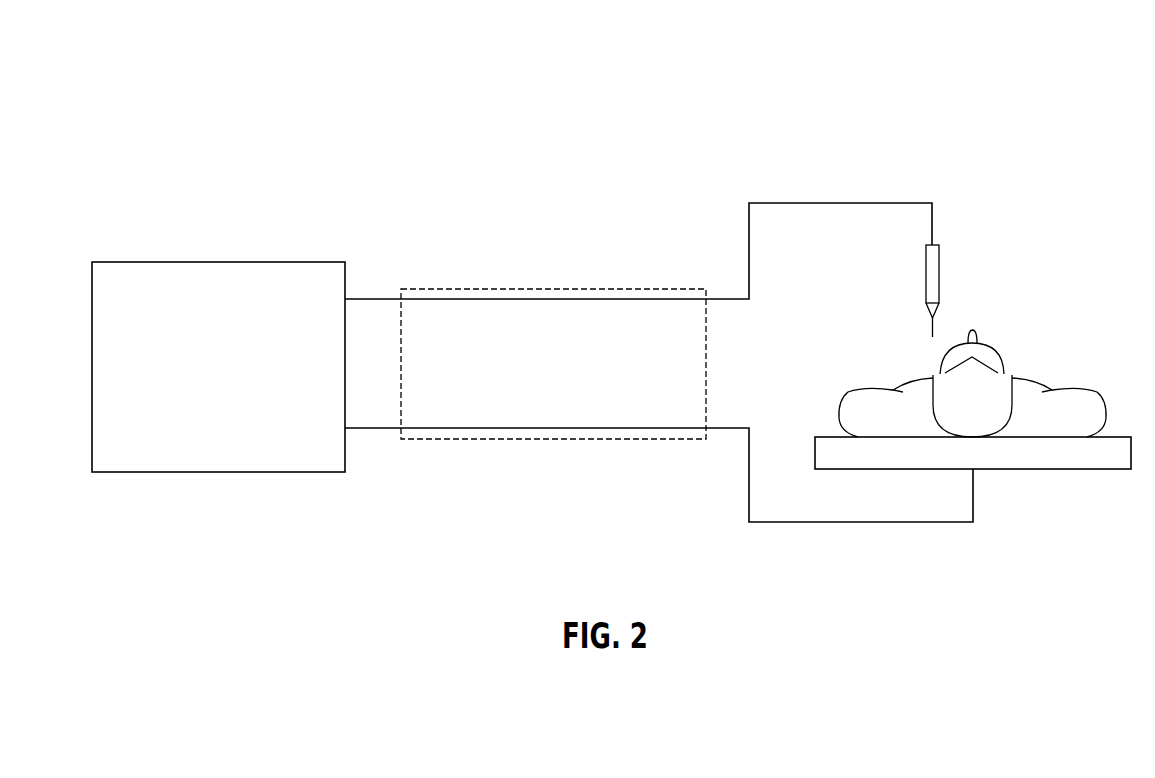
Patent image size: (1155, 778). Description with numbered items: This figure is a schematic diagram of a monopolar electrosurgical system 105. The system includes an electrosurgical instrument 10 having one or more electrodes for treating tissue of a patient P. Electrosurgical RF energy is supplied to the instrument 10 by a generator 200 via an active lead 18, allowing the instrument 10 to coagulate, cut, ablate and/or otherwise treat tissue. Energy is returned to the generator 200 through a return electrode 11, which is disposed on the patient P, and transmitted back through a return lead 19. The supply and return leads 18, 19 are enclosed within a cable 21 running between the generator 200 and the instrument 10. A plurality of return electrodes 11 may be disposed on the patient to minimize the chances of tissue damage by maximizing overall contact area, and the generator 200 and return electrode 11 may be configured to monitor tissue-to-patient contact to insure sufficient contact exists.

The electrosurgical system 105 is at (357, 70).
The generator 200 is at (160, 260).
The active lead 18 is at (595, 298).
The return lead 19 is at (487, 430).
The cable 21 is at (450, 288).
The electrosurgical instrument 10 is at (924, 296).
The return electrode 11 is at (1077, 470).
The patient P is at (1081, 368).